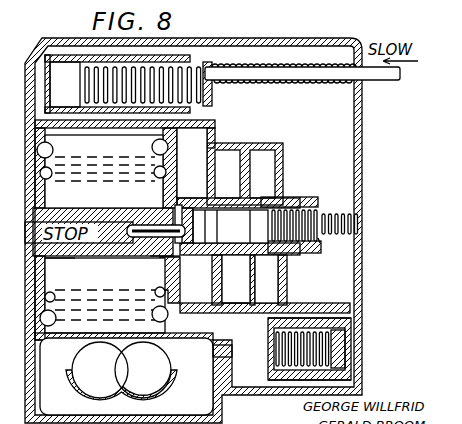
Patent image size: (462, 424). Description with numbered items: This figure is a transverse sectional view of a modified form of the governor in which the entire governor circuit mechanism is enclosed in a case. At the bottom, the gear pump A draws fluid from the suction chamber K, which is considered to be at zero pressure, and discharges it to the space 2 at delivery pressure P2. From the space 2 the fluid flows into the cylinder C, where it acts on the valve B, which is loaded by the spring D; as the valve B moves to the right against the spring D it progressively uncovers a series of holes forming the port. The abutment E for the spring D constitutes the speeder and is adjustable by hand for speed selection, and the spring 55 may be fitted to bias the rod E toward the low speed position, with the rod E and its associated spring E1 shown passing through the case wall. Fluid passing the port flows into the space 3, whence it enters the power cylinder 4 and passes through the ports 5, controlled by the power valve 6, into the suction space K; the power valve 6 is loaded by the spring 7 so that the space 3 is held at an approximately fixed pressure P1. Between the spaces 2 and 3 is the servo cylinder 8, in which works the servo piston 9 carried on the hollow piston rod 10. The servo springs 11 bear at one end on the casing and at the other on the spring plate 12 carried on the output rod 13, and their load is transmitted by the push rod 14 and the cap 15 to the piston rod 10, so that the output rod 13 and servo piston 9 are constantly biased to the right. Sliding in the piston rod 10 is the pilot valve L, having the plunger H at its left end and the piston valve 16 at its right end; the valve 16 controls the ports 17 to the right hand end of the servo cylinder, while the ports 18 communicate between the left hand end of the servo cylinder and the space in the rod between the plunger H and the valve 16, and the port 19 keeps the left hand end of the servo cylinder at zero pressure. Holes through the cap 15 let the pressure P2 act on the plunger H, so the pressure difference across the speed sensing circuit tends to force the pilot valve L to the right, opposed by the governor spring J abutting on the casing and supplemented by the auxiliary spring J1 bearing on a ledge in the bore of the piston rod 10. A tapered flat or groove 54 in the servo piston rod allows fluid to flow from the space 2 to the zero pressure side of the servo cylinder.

The spring 55 is at (290, 66).
The abutment E is at (411, 72).
The lower spring on rod E1 is at (231, 90).
The spring D is at (202, 68).
The cylinder C is at (117, 84).
The valve B is at (84, 81).
The space 3 is at (198, 127).
The servo springs 11 is at (97, 180).
The spring plate 12 is at (192, 163).
The push rod 14 is at (148, 224).
The tapered flat or groove 54 is at (208, 199).
The servo piston 9 is at (227, 174).
The servo cylinder 8 is at (262, 174).
The hollow piston rod 10 is at (291, 198).
The governor spring J is at (348, 211).
The pilot valve L is at (230, 226).
The auxiliary spring J1 is at (311, 247).
The output rod 13 is at (80, 258).
The space 2 is at (104, 295).
The cap 15 is at (173, 247).
The plunger H is at (180, 280).
The ports 18 is at (236, 279).
The ports 17 is at (266, 279).
The piston valve 16 is at (298, 250).
The port 19 is at (236, 300).
The gear pump A is at (121, 371).
The spring 7 is at (214, 350).
The suction chamber K is at (126, 376).
The power cylinder 4 is at (309, 349).
The ports 5 is at (331, 373).
The power valve 6 is at (321, 360).